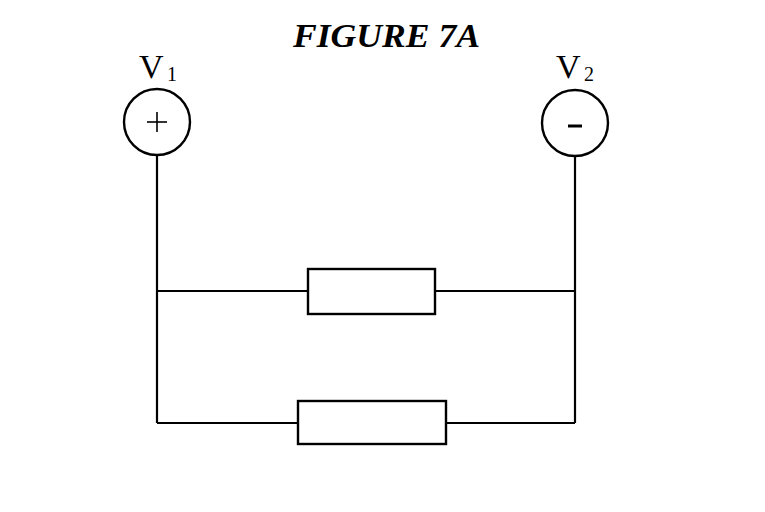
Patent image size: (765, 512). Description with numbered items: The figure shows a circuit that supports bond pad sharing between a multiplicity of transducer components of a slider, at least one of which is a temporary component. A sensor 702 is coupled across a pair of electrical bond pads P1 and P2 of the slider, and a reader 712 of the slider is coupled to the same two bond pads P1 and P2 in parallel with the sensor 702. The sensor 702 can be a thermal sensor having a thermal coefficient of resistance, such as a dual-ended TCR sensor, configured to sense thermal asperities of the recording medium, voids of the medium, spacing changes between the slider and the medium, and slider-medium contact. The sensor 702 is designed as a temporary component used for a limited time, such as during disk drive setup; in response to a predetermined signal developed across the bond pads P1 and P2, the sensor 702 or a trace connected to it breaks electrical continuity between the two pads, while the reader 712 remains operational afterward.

The electrical bond pad P1 is at (124, 108).
The electrical bond pad P2 is at (608, 108).
The sensor 702 is at (393, 269).
The reader 712 is at (378, 401).